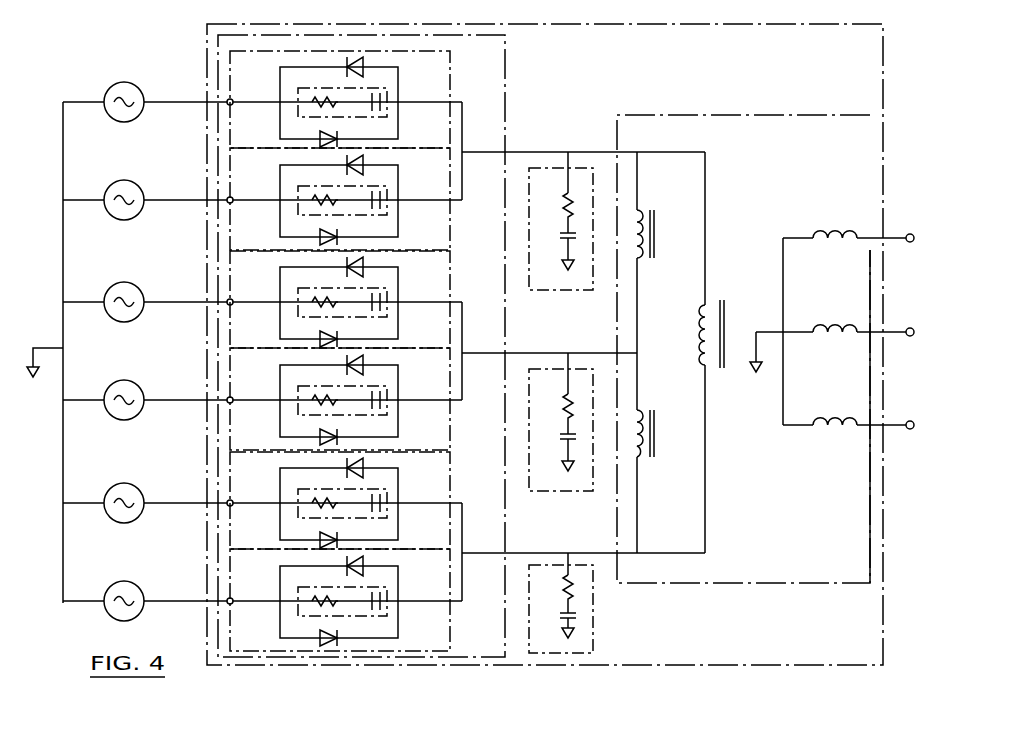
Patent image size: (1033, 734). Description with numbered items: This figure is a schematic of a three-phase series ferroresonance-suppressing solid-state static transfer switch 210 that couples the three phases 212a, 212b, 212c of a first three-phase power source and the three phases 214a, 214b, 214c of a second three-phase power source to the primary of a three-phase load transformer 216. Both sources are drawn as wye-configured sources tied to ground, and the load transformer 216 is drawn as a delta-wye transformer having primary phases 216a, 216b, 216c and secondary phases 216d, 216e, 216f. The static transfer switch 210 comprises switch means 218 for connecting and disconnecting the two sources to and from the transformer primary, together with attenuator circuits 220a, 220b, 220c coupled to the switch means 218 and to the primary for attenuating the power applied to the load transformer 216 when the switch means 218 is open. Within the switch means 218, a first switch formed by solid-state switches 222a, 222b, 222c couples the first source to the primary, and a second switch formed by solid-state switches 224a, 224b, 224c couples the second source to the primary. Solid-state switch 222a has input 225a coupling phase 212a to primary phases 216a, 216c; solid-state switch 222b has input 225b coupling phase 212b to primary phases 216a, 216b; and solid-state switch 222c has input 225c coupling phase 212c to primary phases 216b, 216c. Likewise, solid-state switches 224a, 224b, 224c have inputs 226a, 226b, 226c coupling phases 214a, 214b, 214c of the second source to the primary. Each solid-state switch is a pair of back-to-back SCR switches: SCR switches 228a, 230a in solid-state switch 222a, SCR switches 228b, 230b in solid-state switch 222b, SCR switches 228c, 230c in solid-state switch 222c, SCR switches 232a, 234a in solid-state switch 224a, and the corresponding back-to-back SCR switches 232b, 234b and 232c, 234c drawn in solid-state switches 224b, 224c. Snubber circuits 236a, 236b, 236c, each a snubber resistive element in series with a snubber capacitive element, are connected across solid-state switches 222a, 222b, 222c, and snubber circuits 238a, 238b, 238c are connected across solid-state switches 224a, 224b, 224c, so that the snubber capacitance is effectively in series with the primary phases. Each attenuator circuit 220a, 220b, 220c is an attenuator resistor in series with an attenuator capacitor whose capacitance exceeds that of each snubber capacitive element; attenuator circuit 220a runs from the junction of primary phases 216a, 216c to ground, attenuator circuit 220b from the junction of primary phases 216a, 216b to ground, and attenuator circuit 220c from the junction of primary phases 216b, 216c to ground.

The three-phase series ferroresonance-suppressing solid-state static transfer switch 210 is at (884, 486).
The phase of first three-phase power source 212a is at (133, 82).
The phase of first three-phase power source 212b is at (111, 287).
The phase of first three-phase power source 212c is at (111, 488).
The phase of second three-phase power source 214a is at (126, 180).
The phase of second three-phase power source 214b is at (112, 386).
The phase of second three-phase power source 214c is at (112, 586).
The three-phase load transformer 216 is at (755, 115).
The primary phase of load transformer 216a is at (655, 226).
The primary phase of load transformer 216b is at (657, 425).
The primary phase of load transformer 216c is at (703, 310).
The secondary phase of load transformer 216d is at (835, 230).
The secondary phase of load transformer 216e is at (821, 324).
The secondary phase of load transformer 216f is at (830, 415).
The switch means 218 is at (505, 112).
The attenuator circuit 220a is at (545, 291).
The attenuator circuit 220b is at (545, 492).
The attenuator circuit 220c is at (593, 634).
The solid-state switch 222a is at (452, 88).
The solid-state switch 222b is at (365, 299).
The solid-state switch 222c is at (365, 500).
The solid-state switch 224a is at (452, 238).
The solid-state switch 224b is at (366, 399).
The solid-state switch 224c is at (366, 600).
The input 225a is at (227, 105).
The input 225b is at (194, 315).
The input 225c is at (196, 516).
The input 226a is at (227, 197).
The input 226b is at (194, 379).
The input 226c is at (194, 587).
The SCR switch 228a is at (363, 60).
The SCR switch 228b is at (397, 263).
The SCR switch 228c is at (397, 469).
The SCR switch 230a is at (320, 138).
The SCR switch 230b is at (286, 332).
The SCR switch 230c is at (286, 532).
The SCR switch 232a is at (365, 160).
The diode 232b is at (397, 365).
The diode 232c is at (397, 568).
The SCR switch 234a is at (320, 236).
The diode 234b is at (286, 428).
The diode 234c is at (286, 631).
The snubber circuit 236a is at (386, 112).
The snubber circuit 236b is at (373, 313).
The snubber circuit 236c is at (373, 514).
The snubber circuit 238a is at (386, 210).
The snubber circuit 238b is at (373, 409).
The snubber circuit 238c is at (373, 608).